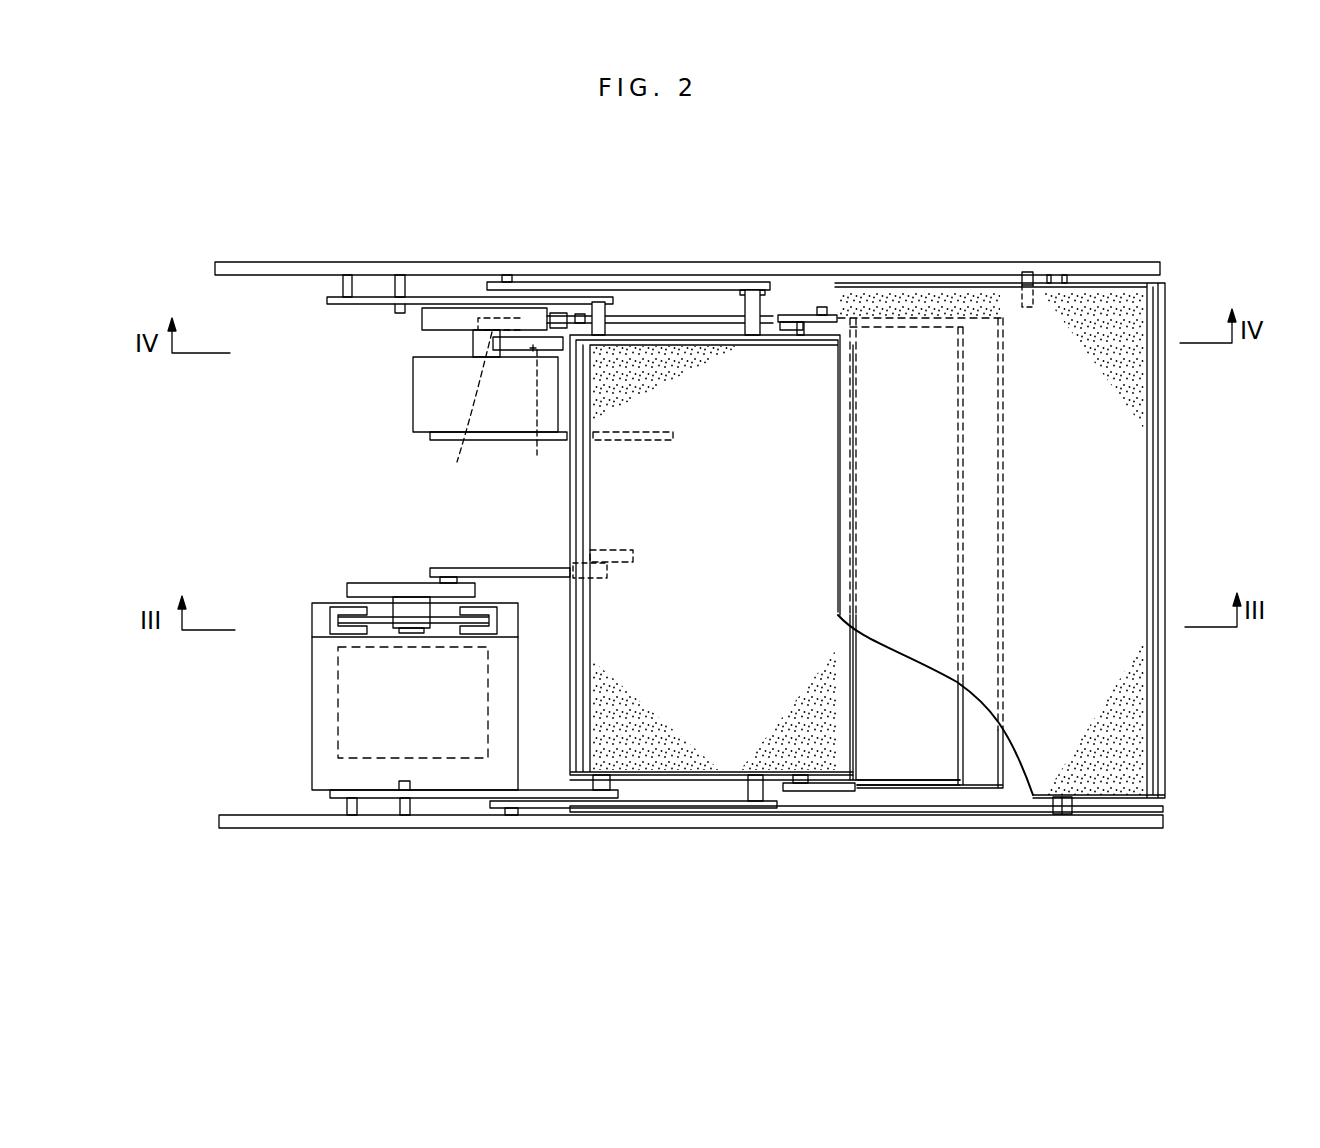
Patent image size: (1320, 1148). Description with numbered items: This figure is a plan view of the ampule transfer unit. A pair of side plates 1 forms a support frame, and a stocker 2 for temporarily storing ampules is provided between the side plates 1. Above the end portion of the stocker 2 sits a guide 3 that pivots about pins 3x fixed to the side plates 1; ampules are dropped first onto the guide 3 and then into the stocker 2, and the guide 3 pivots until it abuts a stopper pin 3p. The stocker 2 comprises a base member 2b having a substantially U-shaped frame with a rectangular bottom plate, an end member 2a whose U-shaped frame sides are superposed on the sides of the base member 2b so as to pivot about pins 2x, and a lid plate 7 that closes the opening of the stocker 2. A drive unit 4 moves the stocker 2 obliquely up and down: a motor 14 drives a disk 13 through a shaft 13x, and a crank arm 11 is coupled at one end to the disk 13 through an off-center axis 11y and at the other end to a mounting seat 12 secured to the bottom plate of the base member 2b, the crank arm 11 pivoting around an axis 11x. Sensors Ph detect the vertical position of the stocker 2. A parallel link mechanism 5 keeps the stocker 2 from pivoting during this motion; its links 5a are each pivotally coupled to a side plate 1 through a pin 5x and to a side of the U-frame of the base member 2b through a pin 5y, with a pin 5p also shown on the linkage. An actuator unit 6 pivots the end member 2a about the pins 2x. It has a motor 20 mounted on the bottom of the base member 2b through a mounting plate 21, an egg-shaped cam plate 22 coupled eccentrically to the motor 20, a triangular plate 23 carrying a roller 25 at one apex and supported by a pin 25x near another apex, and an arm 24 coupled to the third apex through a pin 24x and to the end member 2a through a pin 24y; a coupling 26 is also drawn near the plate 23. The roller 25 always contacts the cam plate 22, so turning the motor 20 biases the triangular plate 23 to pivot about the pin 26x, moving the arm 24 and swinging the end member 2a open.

The side plate 1 is at (250, 258).
The stocker 2 is at (765, 558).
The end member 2a is at (870, 773).
The base member 2b is at (725, 745).
The pin 2x is at (802, 320).
The guide 3 is at (1036, 534).
The stopper pin 3p is at (1027, 272).
The pin 3x is at (1062, 812).
The drive unit 4 is at (455, 647).
The link mechanism 5 is at (735, 530).
The link 5a is at (460, 297).
The holder pin 5p is at (400, 278).
The pin 5x is at (343, 278).
The pin 5y is at (603, 300).
The actuator unit 6 is at (506, 401).
The lid plate 7 is at (918, 770).
The crank arm 11 is at (510, 568).
The axis 11x is at (598, 572).
The axis 11y is at (447, 577).
The mounting seat 12 is at (590, 550).
The disk 13 is at (372, 585).
The shaft 13x is at (410, 598).
The motor 14 is at (345, 726).
The motor 20 is at (413, 392).
The mounting plate 21 is at (435, 440).
The cam plate 22 is at (422, 315).
The triangular plate 23 is at (500, 340).
The arm 24 is at (733, 257).
The pin 24x is at (580, 300).
The pin 24y is at (822, 310).
The roller 25 is at (457, 327).
The pin 25x is at (460, 412).
The coupling member 26 is at (560, 345).
The pin 26x is at (540, 419).
The sensor Ph is at (333, 618).